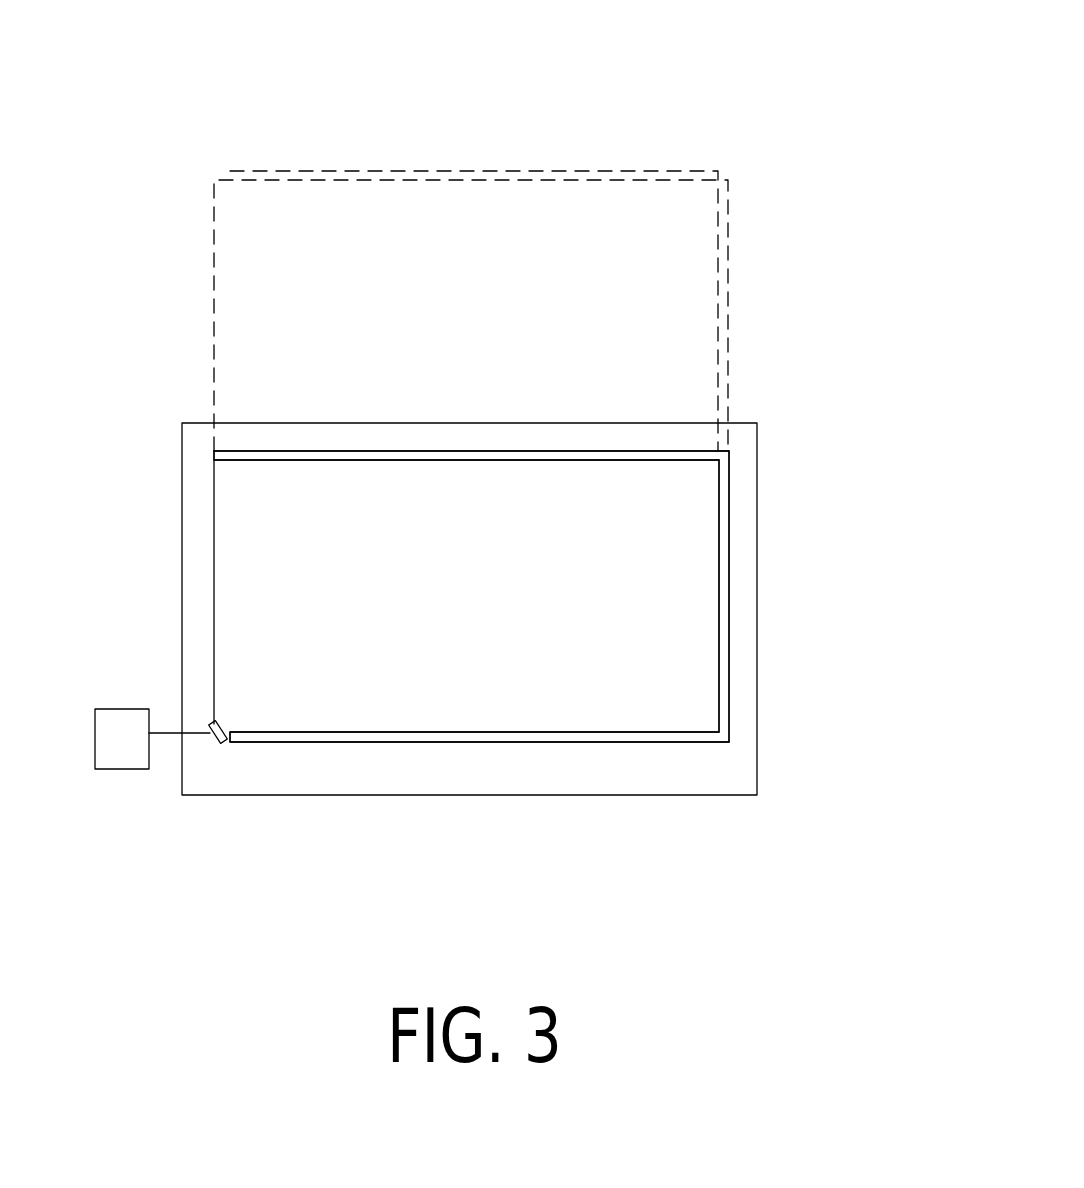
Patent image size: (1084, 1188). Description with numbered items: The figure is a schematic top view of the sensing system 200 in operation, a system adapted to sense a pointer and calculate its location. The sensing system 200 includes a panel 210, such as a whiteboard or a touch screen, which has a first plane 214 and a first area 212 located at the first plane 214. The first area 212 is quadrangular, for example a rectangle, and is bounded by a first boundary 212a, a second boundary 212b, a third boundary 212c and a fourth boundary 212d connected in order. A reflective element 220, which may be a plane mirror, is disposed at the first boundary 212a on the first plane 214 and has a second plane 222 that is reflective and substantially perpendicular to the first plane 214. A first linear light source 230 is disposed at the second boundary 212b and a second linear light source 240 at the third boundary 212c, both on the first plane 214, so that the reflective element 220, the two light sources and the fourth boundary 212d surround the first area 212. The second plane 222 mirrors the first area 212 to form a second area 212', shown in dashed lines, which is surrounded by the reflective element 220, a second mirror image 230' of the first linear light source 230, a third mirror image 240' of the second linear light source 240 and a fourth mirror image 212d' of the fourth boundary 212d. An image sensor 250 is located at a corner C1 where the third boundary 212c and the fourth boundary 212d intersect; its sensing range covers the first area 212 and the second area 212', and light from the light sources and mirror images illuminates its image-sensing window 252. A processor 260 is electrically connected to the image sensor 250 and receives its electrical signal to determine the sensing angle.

The sensing system 200 is at (843, 942).
The panel 210 is at (748, 436).
The first area 212 is at (568, 604).
The first boundary 212a is at (347, 460).
The second boundary 212b is at (720, 612).
The third boundary 212c is at (621, 742).
The fourth boundary 212d is at (149, 587).
The second area 212' is at (469, 225).
The fourth mirror image 212d' is at (163, 307).
The reflective element 220 is at (452, 453).
The second plane 222 is at (650, 472).
The first linear light source 230 is at (802, 596).
The second mirror image 230' is at (777, 315).
The second linear light source 240 is at (479, 797).
The third mirror image 240' is at (481, 268).
The first plane 214 is at (739, 506).
The image sensor 250 is at (210, 746).
The image-sensing window 252 is at (226, 721).
The processor 260 is at (118, 769).
The corner C1 is at (208, 722).